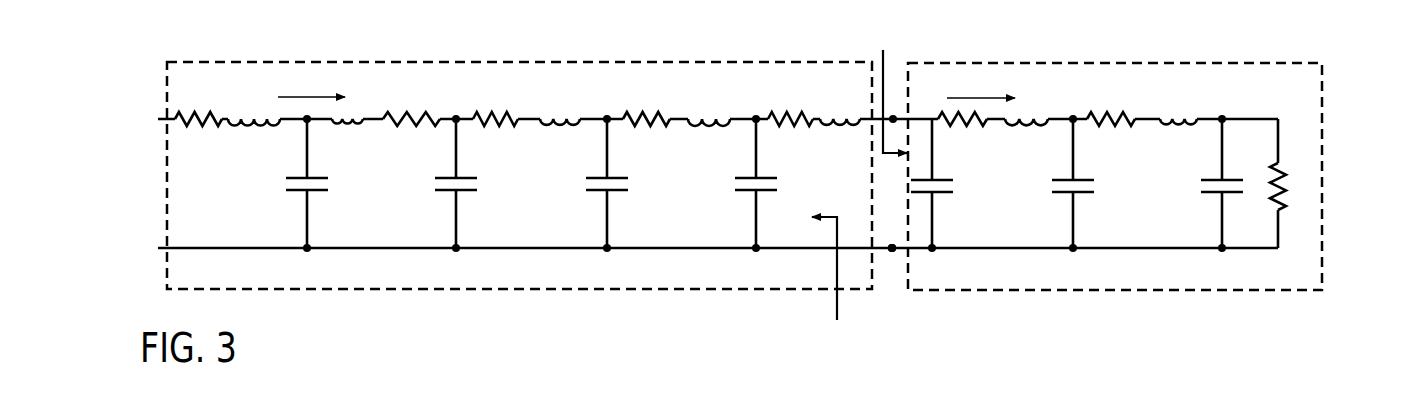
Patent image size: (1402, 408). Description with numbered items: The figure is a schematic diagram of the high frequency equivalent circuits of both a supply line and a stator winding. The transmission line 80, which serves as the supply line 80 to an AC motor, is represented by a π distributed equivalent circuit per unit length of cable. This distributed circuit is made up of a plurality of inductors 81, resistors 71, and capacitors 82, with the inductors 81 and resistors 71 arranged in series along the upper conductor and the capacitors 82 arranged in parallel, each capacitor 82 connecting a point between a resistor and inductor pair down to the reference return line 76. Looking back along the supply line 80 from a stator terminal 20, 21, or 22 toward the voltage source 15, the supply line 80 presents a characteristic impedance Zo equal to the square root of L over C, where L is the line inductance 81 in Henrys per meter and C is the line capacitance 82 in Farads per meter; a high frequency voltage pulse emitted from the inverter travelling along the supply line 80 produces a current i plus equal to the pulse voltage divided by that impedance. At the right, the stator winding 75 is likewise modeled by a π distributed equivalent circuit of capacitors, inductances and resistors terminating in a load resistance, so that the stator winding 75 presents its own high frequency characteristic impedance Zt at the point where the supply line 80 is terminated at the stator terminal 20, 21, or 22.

The voltage source 15 is at (122, 180).
The transmission line 80 is at (400, 62).
The stator winding 75 is at (1122, 63).
The series resistors 71 is at (508, 118).
The inductors 81 is at (362, 118).
The capacitors 82 is at (447, 191).
The reference return line 76 is at (518, 249).
The stator terminal 20 is at (892, 252).
The stator terminal 21 is at (977, 299).
The stator terminal 22 is at (977, 299).